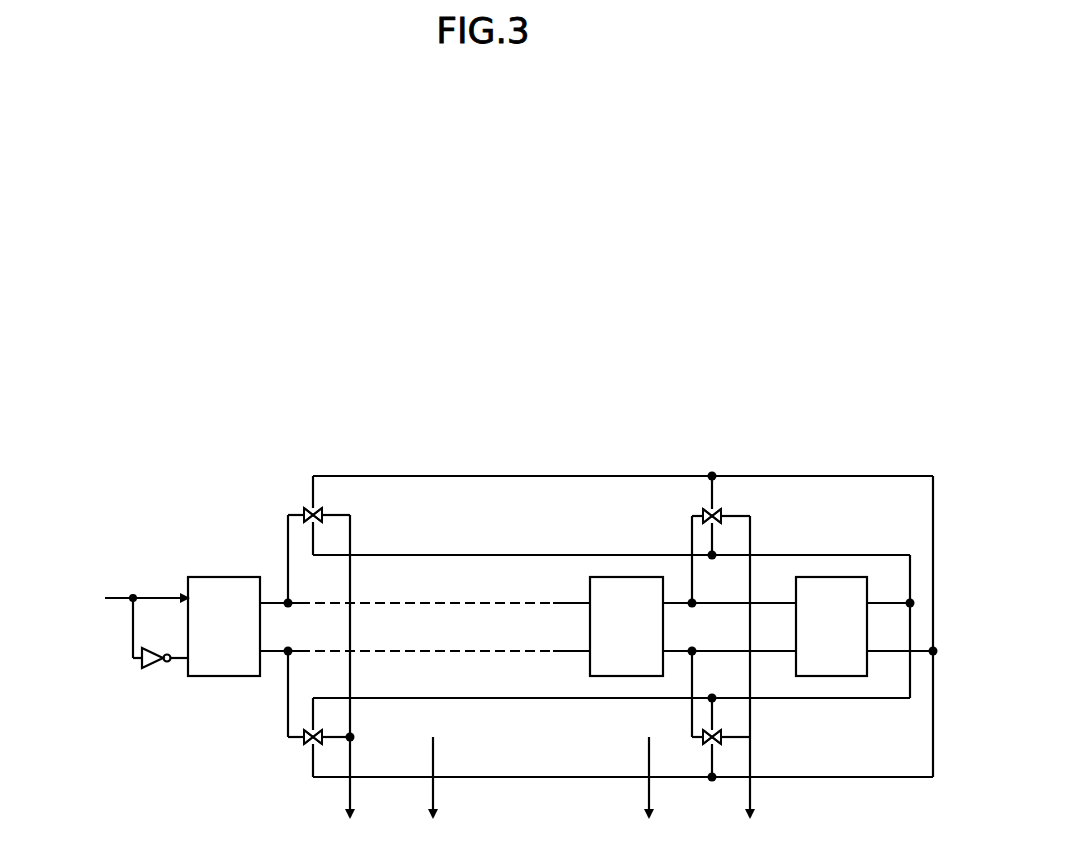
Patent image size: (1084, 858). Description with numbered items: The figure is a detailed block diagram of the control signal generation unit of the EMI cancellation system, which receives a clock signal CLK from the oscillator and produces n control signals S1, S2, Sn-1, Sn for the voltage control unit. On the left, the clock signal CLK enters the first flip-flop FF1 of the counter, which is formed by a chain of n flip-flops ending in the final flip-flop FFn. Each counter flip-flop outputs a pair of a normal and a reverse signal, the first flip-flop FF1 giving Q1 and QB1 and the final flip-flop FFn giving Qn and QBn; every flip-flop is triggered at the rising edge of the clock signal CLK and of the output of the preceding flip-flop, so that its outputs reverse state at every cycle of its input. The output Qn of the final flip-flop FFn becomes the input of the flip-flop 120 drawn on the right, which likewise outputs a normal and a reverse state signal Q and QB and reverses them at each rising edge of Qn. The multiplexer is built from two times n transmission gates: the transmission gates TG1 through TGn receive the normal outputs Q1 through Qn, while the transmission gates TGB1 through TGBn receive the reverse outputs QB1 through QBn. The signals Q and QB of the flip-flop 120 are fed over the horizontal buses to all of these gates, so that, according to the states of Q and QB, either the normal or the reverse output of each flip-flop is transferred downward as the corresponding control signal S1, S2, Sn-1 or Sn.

The flip-flop 120 is at (832, 577).
The clock signal CLK is at (122, 598).
The flip-flop FF1 is at (224, 626).
The flip-flop FFn is at (626, 626).
The output signal Q1 is at (280, 589).
The reverse output signal QB1 is at (281, 637).
The output signal Qn is at (729, 589).
The reverse output signal QBn is at (729, 637).
The output signal Q is at (888, 590).
The reverse output signal QB is at (900, 638).
The transmission gate TG1 is at (335, 504).
The transmission gate TGn is at (733, 504).
The transmission gate TGB1 is at (288, 748).
The transmission gate TGBn is at (687, 748).
The control signal S1 is at (351, 683).
The control signal S2 is at (433, 794).
The control signal Sn-1 is at (655, 794).
The control signal Sn is at (751, 683).